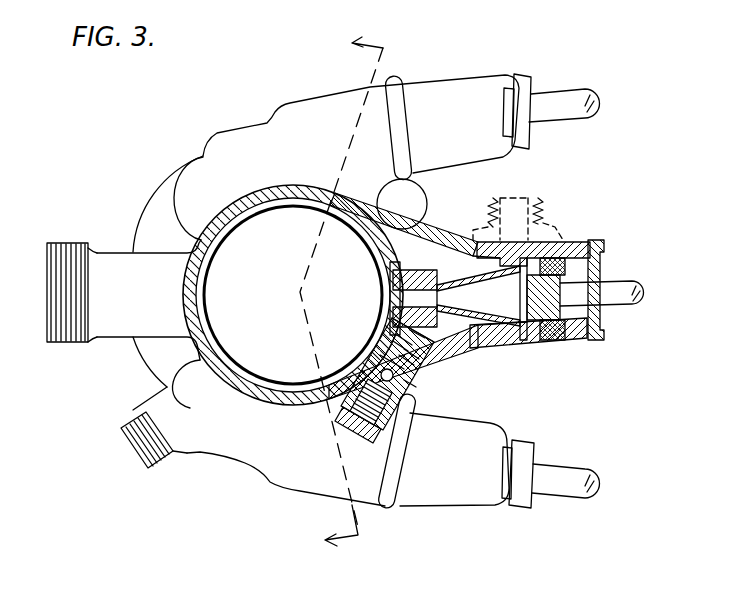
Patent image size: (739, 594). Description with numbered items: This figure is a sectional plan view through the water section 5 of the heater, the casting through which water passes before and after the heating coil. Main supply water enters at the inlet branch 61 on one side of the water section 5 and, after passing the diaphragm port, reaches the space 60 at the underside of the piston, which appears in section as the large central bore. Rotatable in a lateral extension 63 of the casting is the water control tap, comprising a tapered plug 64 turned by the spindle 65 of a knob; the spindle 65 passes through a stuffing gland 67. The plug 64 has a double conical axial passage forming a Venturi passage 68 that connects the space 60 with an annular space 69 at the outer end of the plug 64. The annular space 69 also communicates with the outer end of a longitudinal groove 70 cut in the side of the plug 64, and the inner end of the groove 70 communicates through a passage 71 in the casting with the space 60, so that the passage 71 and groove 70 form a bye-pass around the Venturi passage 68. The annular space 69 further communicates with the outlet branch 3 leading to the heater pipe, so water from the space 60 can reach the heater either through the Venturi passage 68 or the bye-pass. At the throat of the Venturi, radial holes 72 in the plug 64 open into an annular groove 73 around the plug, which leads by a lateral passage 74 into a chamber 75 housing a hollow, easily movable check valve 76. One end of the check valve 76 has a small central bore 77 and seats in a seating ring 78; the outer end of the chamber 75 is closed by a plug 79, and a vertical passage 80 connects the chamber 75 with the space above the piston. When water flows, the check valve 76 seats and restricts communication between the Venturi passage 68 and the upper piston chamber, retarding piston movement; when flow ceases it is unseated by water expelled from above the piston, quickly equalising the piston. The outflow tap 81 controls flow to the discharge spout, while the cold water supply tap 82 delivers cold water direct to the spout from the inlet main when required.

The branch 3 is at (540, 204).
The water section casting 5 is at (125, 213).
The space at underside of piston 60 is at (287, 203).
The inlet branch 61 is at (110, 322).
The lateral extension 63 is at (557, 340).
The tapered plug 64 is at (397, 302).
The spindle 65 is at (603, 293).
The stuffing gland 67 is at (598, 262).
The Venturi passage 68 is at (478, 296).
The annular space 69 is at (537, 343).
The longitudinal groove 70 is at (480, 267).
The passage 71 is at (402, 242).
The radial holes 72 is at (393, 281).
The annular groove 73 is at (425, 268).
The lateral passage 74 is at (413, 318).
The chamber 75 is at (388, 342).
The check valve 76 is at (395, 340).
The central bore 77 is at (410, 345).
The seating ring 78 is at (405, 324).
The plug 79 is at (337, 428).
The vertical passage 80 is at (410, 392).
The outflow tap 81 is at (470, 496).
The cold water supply tap 82 is at (457, 92).